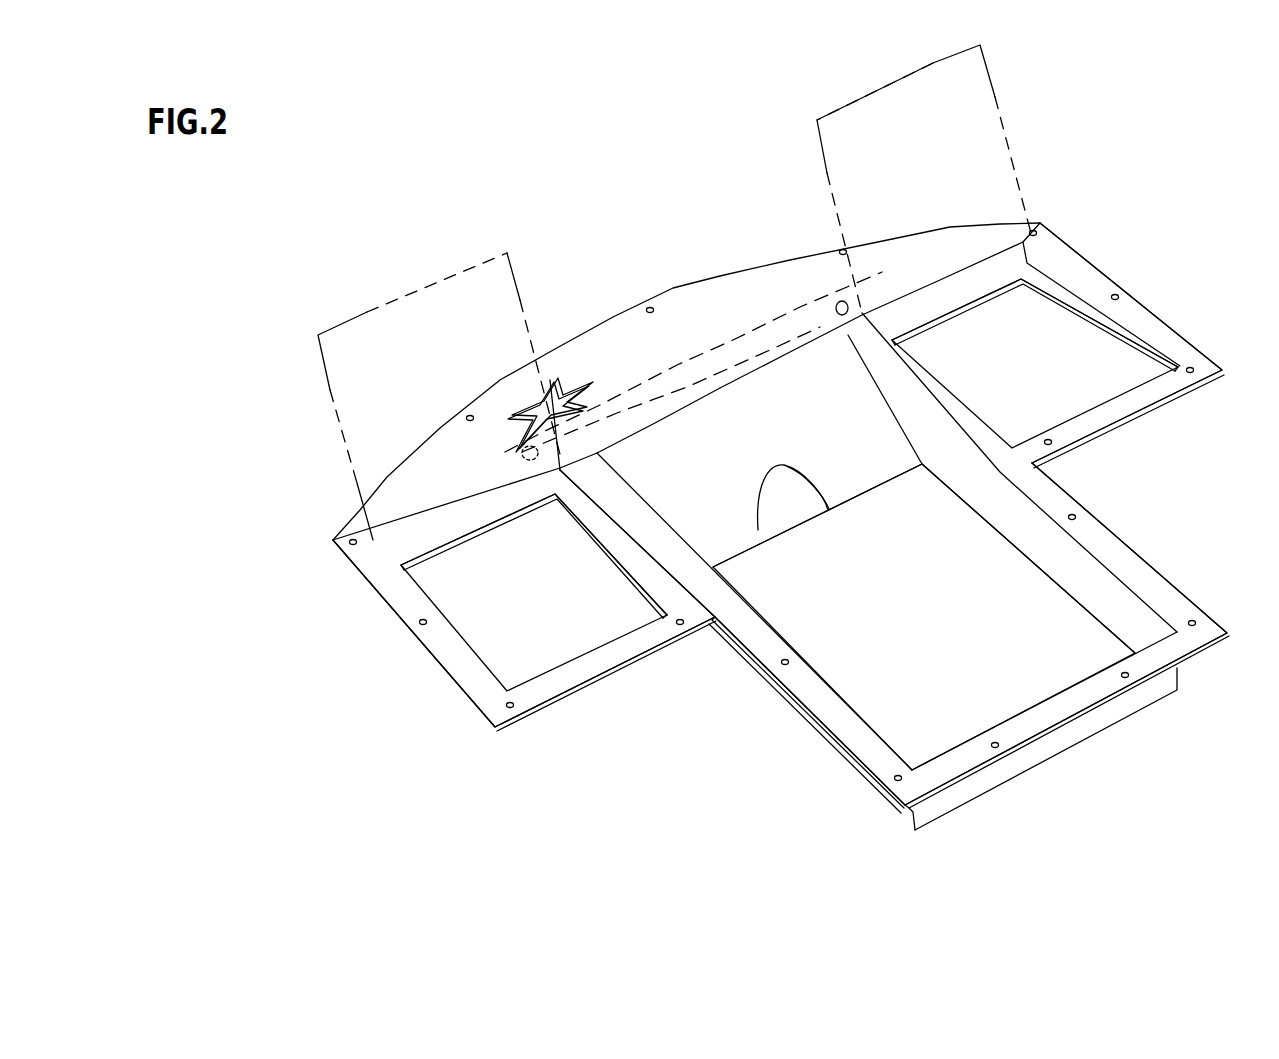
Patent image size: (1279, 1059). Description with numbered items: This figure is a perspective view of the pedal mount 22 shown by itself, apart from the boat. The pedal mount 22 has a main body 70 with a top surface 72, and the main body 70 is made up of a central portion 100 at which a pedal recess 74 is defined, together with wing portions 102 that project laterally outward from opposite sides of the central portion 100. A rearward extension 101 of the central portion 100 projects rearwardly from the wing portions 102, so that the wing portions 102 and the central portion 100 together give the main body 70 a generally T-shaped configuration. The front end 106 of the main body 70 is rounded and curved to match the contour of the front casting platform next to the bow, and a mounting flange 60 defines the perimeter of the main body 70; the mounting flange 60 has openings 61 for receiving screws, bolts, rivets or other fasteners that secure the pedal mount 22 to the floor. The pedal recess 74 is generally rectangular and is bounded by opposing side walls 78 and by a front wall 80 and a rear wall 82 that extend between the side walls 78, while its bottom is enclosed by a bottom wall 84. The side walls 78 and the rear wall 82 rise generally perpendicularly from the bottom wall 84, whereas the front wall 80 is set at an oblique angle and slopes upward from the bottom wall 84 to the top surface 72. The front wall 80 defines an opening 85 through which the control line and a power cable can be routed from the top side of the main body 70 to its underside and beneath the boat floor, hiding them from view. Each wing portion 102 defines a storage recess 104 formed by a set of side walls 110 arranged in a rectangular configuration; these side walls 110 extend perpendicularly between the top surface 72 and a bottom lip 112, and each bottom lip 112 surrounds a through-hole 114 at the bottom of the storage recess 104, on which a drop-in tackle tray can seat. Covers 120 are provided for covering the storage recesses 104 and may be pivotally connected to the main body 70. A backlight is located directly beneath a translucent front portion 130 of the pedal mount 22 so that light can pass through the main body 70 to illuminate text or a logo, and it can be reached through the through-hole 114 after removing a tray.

The pedal mount 22 is at (1158, 148).
The mounting flange 60 is at (907, 810).
The openings 61 is at (419, 628).
The main body 70 is at (667, 280).
The top surface 72 is at (770, 275).
The pedal recess 74 is at (1073, 630).
The side walls 78 is at (765, 620).
The front wall 80 is at (600, 415).
The rear wall 82 is at (1015, 718).
The bottom wall 84 is at (934, 662).
The opening 85 is at (788, 468).
The central portion 100 is at (1045, 750).
The rearward extension 101 is at (865, 770).
The wing portions 102 is at (516, 726).
The storage recess 104 is at (415, 552).
The front end 106 is at (612, 316).
The side walls 110 is at (645, 553).
The bottom lip 112 is at (583, 510).
The through-holes 114 is at (593, 540).
The covers 120 is at (323, 374).
The translucent front portion 130 is at (718, 292).